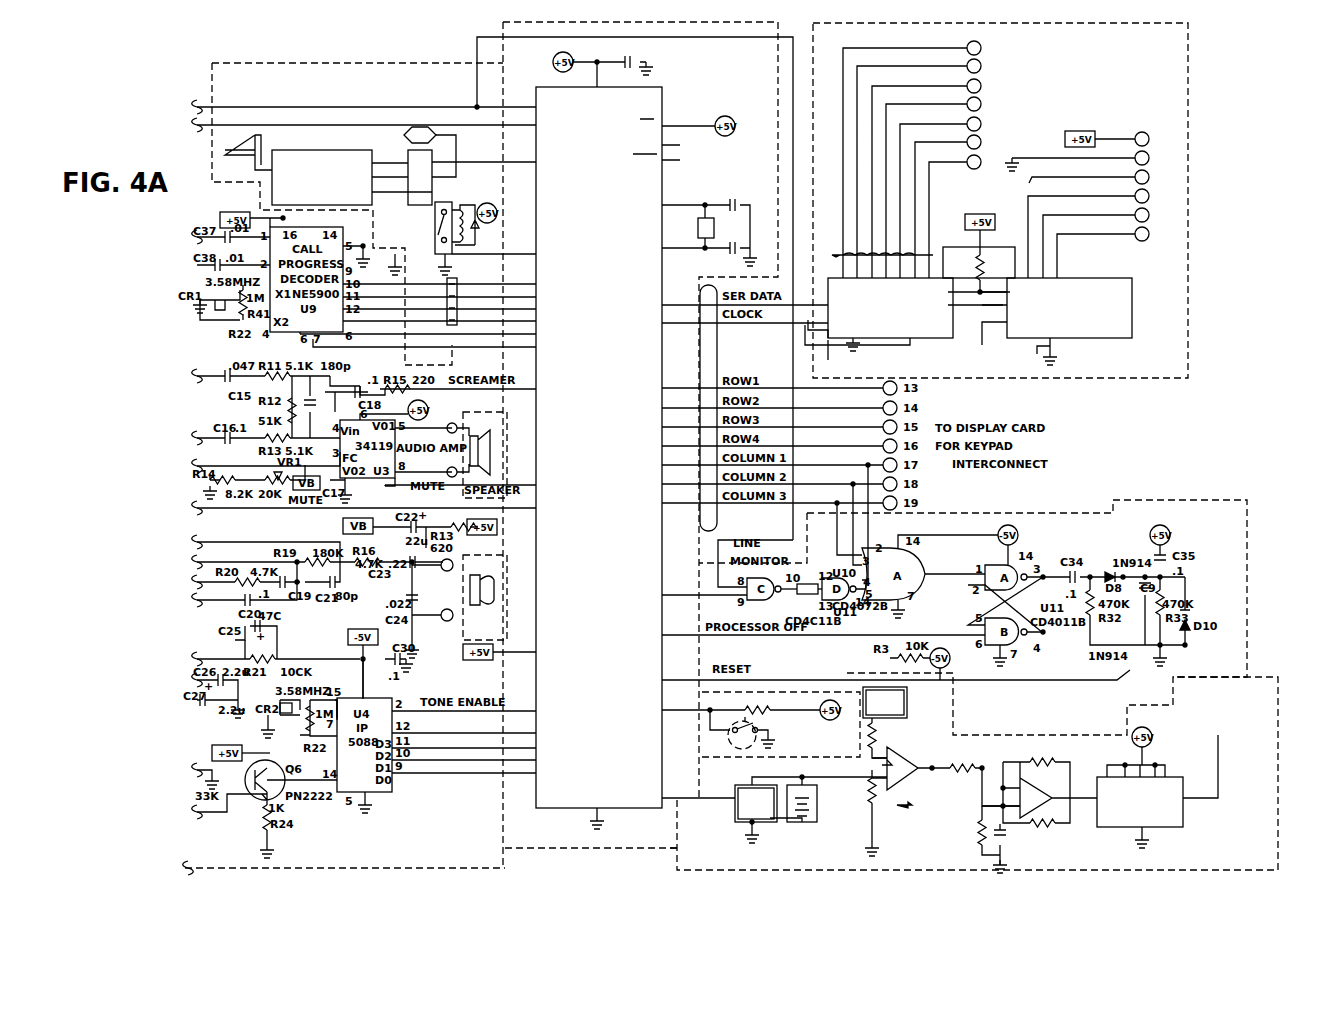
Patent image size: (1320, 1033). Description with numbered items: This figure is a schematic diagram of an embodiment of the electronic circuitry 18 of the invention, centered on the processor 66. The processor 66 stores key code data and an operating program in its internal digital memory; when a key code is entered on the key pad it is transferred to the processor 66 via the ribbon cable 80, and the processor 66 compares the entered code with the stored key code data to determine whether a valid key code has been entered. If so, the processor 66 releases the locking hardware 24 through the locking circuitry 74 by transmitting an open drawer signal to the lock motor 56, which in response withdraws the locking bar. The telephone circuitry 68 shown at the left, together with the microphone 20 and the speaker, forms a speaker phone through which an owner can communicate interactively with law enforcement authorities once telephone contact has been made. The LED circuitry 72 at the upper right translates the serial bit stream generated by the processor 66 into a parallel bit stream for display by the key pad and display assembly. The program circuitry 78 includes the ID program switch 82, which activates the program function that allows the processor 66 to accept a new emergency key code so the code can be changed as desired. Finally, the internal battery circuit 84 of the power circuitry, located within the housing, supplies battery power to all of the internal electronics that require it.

The electronic circuitry 18 is at (1200, 156).
The microphone 20 is at (504, 612).
The locking hardware 24 is at (503, 435).
The lock motor 56 is at (340, 154).
The processor 66 is at (580, 848).
The telephone circuitry 68 is at (363, 871).
The LED circuitry 72 is at (1188, 212).
The locking circuitry 74 is at (365, 62).
The program circuitry 78 is at (705, 720).
The ribbon cable 80 is at (691, 516).
The ID program switch 82 is at (712, 754).
The internal battery circuit 84 is at (1260, 678).